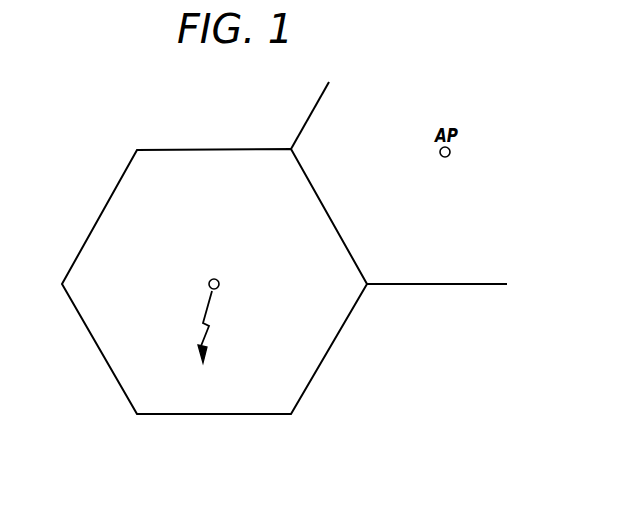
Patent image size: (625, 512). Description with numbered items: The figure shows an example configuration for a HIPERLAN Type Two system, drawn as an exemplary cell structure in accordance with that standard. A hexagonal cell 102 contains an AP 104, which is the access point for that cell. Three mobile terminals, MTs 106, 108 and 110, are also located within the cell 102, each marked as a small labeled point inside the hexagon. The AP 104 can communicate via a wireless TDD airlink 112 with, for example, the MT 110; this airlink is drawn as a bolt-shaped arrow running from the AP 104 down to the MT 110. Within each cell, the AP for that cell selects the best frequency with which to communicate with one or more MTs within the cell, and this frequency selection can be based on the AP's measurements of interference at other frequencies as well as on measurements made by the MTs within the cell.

The cell 102 is at (158, 149).
The AP 104 is at (228, 264).
The MT 106 is at (287, 332).
The MT 108 is at (135, 268).
The MT 110 is at (203, 382).
The wireless TDD airlink 112 is at (203, 323).